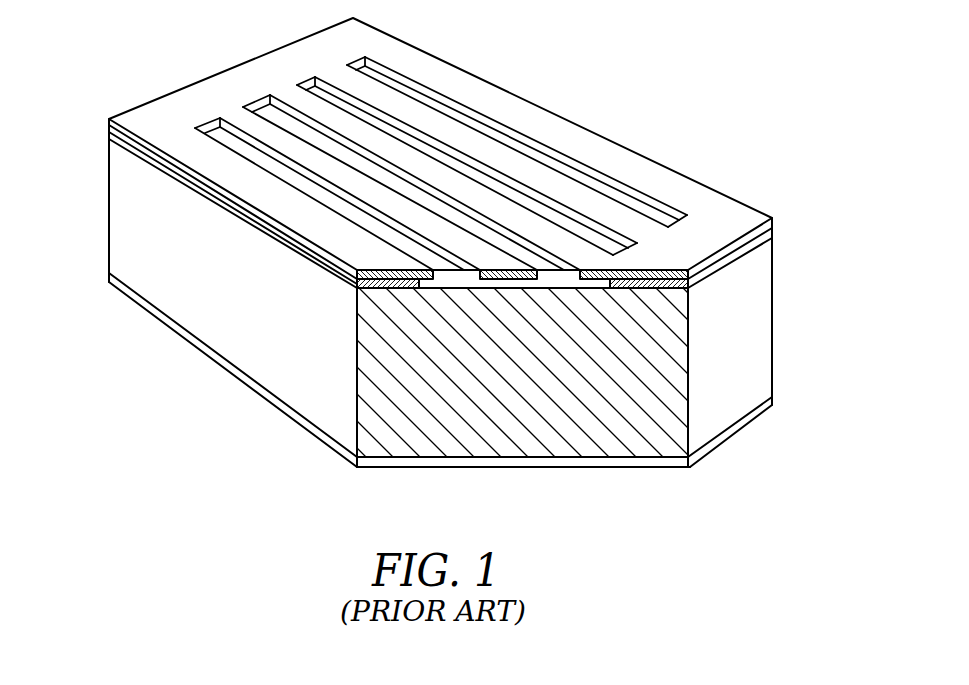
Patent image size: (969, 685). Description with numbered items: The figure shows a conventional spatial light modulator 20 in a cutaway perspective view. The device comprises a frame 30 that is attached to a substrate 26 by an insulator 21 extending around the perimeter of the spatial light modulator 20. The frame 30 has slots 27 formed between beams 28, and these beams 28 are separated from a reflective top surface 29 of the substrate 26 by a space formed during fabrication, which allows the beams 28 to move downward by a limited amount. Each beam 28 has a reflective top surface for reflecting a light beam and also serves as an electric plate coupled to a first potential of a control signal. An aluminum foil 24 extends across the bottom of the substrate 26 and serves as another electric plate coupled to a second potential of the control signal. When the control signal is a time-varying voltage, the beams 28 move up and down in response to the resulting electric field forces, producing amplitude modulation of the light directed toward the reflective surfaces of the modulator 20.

The spatial light modulator 20 is at (95, 142).
The insulator 21 is at (757, 245).
The aluminum foil 24 is at (612, 467).
The substrate 26 is at (741, 353).
The slots 27 is at (283, 117).
The beams 28 is at (235, 123).
The reflective top surface 29 is at (390, 180).
The frame 30 is at (588, 148).